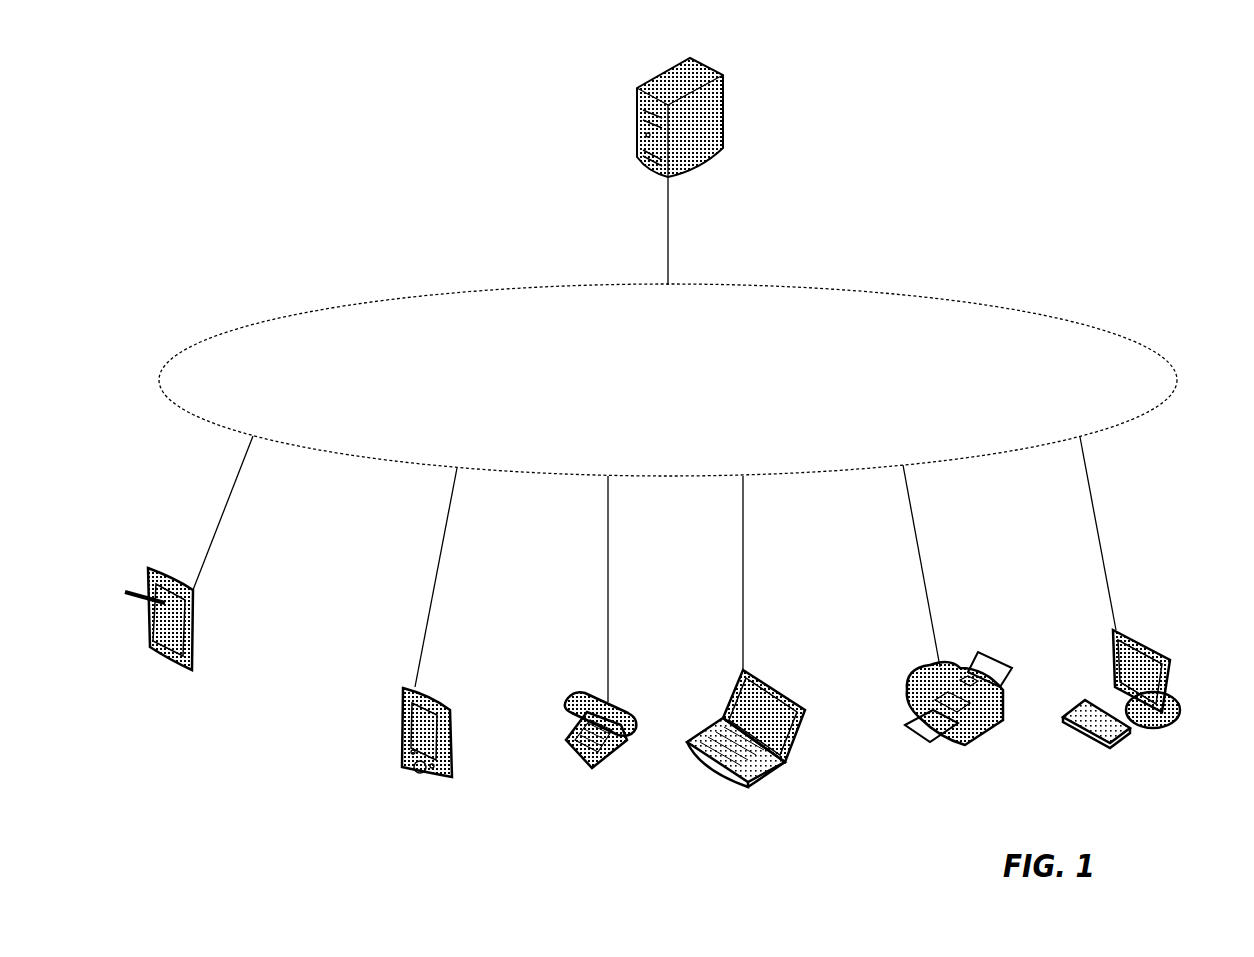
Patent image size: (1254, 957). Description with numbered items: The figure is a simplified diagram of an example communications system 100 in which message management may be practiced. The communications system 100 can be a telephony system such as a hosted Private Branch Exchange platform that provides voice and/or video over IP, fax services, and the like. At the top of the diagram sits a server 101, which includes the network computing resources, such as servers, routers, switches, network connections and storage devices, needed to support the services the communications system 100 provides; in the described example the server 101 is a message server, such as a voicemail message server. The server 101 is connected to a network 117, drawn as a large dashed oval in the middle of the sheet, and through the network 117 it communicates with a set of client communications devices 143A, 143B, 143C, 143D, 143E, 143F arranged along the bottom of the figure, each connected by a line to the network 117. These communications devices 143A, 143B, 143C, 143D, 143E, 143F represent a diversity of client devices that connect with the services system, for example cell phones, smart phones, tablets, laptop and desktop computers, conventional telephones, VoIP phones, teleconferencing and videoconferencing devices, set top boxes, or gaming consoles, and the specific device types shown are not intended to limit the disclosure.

The communications system 100 is at (1148, 73).
The server 101 is at (726, 121).
The network 117 is at (668, 380).
The communications device 143A is at (198, 618).
The communications device 143B is at (445, 698).
The communications device 143C is at (632, 714).
The communications device 143D is at (770, 678).
The communications device 143E is at (985, 645).
The communications device 143F is at (1172, 656).